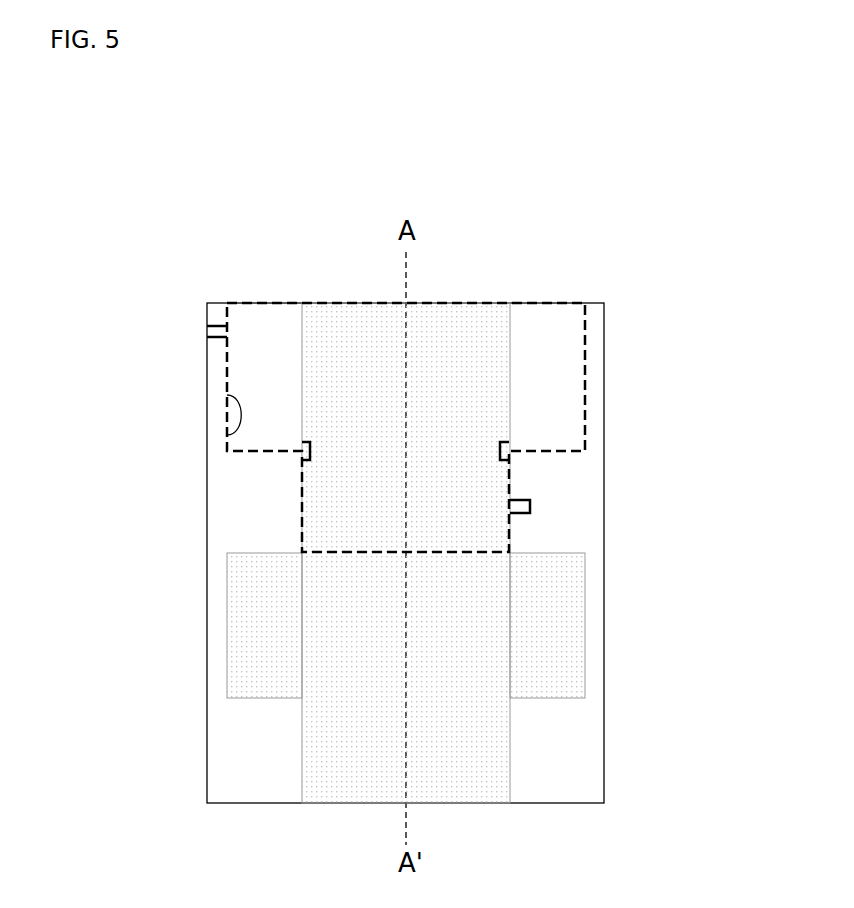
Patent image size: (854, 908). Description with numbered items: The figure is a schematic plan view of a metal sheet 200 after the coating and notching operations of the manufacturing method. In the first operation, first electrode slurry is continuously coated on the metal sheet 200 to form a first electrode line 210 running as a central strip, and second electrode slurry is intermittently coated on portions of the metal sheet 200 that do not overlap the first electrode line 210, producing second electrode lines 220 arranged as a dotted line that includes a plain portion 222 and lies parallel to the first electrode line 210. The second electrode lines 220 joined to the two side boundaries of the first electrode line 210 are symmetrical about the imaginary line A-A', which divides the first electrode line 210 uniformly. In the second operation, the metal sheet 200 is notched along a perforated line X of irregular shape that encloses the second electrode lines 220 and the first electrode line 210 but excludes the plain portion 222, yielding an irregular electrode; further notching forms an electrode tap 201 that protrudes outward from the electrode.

The metal sheet 200 is at (604, 345).
The electrode tap 201 is at (207, 333).
The first electrode line 210 is at (338, 783).
The second electrode lines 220 is at (258, 667).
The plain portion 222 is at (238, 513).
The perforated line X is at (227, 434).